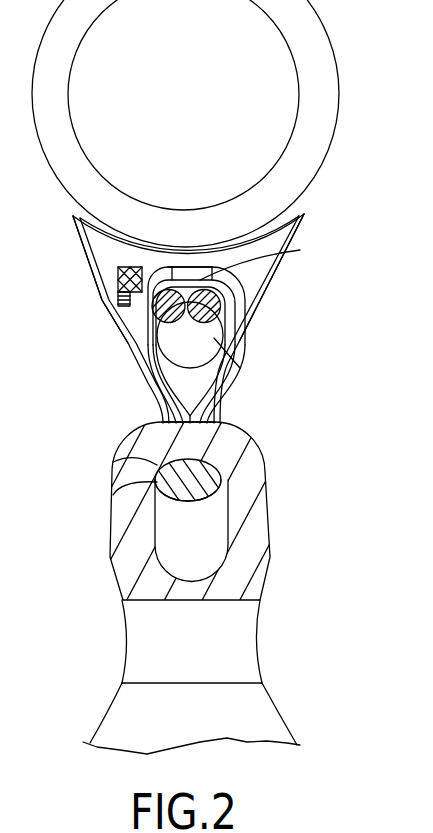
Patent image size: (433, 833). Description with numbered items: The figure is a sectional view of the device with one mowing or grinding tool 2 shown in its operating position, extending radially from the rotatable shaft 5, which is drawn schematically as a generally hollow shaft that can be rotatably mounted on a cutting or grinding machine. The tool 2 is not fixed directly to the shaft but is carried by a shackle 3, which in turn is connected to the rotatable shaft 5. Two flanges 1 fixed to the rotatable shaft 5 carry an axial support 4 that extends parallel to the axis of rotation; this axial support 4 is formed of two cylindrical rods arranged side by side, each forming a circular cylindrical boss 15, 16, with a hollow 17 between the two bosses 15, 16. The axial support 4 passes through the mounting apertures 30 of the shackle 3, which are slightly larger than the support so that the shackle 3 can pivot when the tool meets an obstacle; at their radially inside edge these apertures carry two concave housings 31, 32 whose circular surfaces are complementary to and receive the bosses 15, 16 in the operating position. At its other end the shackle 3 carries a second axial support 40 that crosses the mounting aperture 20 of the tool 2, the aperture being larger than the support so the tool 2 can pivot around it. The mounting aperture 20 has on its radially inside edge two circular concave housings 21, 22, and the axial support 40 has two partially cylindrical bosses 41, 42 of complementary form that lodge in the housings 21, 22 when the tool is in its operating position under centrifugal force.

The flanges 1 is at (289, 216).
The mowing or grinding tool 2 is at (247, 547).
The shackle 3 is at (243, 367).
The axial support 4 is at (153, 312).
The rotatable shaft 5 is at (341, 124).
The cylindrical boss 15 is at (84, 250).
The cylindrical boss 16 is at (205, 296).
The hollow 17 is at (133, 368).
The mounting aperture 20 is at (230, 521).
The concave housing 21 is at (113, 462).
The concave housing 22 is at (233, 423).
The mounting apertures 30 is at (208, 336).
The concave housing 31 is at (118, 288).
The concave housing 32 is at (277, 233).
The axial support 40 is at (212, 458).
The boss 41 is at (112, 497).
The boss 42 is at (223, 474).